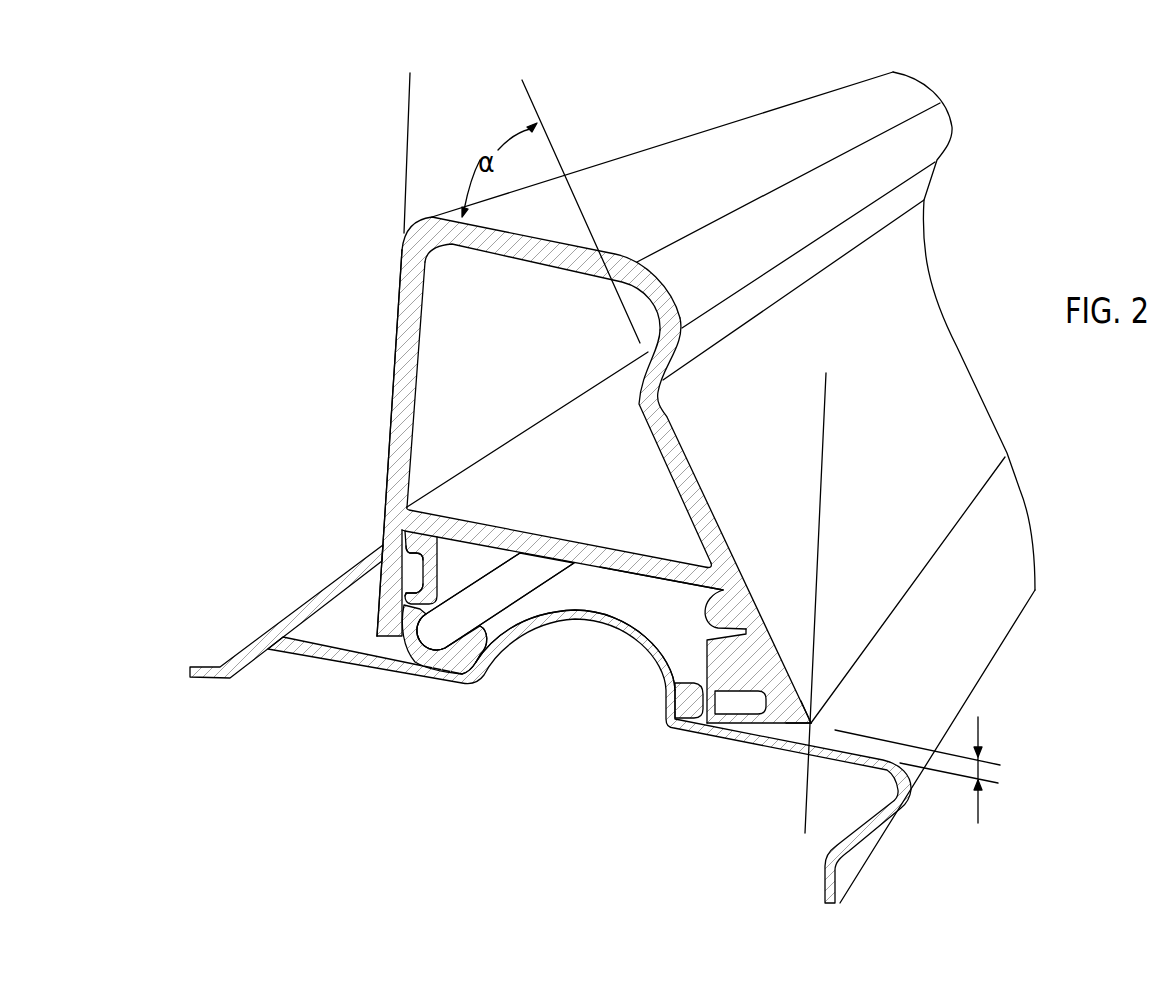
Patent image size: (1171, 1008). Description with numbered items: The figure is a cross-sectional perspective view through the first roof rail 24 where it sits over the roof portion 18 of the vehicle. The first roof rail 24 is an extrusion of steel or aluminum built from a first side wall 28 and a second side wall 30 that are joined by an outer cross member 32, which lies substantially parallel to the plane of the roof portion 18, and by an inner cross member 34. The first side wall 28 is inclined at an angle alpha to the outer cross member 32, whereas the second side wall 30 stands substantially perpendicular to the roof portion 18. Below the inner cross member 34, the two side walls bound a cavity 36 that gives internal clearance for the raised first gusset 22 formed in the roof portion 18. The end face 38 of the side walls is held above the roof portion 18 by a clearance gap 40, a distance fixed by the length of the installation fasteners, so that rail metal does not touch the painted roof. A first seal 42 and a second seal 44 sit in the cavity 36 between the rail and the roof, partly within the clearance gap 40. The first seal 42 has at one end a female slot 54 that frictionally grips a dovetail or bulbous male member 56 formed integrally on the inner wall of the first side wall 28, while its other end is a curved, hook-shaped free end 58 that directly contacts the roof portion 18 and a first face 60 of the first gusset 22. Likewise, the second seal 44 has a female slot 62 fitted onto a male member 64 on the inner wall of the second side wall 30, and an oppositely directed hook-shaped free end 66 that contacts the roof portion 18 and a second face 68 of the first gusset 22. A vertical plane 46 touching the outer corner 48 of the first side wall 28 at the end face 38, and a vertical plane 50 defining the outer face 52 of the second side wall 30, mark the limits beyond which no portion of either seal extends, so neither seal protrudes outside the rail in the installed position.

The roof portion 18 is at (322, 645).
The first gusset 22 is at (577, 617).
The first roof rail 24 is at (1006, 185).
The first side wall 28 is at (698, 503).
The second side wall 30 is at (403, 356).
The outer cross member 32 is at (537, 247).
The inner cross member 34 is at (553, 540).
The cavity 36 is at (650, 578).
The end face 38 is at (795, 735).
The clearance gap 40 is at (979, 718).
The first seal 42 is at (708, 702).
The second seal 44 is at (420, 552).
The vertical plane 46 is at (827, 405).
The outer corner 48 is at (816, 722).
The vertical plane 50 is at (398, 150).
The outer face 52 is at (381, 451).
The female slot 54 is at (744, 631).
The male member 56 is at (742, 657).
The free end 58 is at (723, 722).
The first face 60 is at (678, 663).
The female slot 62 is at (405, 556).
The male member 64 is at (407, 598).
The free end 66 is at (448, 668).
The second face 68 is at (480, 622).